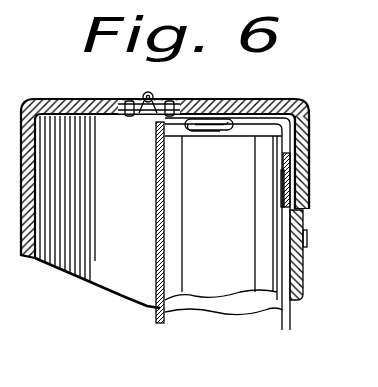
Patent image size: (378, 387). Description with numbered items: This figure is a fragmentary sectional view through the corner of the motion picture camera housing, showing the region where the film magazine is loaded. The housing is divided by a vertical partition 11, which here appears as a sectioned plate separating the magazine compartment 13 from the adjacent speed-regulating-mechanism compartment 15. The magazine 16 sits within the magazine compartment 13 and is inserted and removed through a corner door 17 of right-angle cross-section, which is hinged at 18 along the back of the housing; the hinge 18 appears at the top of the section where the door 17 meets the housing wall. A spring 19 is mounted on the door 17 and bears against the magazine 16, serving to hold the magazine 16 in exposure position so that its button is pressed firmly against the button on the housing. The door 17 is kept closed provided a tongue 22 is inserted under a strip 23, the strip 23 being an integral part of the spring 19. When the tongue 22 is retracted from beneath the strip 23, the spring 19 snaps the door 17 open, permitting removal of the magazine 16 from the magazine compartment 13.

The vertical partition 11 is at (150, 283).
The magazine compartment 13 is at (252, 288).
The speed-regulating-mechanism compartment 15 is at (301, 268).
The magazine 16 is at (211, 272).
The corner door 17 is at (259, 113).
The hinge 18 is at (146, 93).
The spring 19 is at (203, 120).
The tongue 22 is at (289, 186).
The strip 23 is at (288, 162).